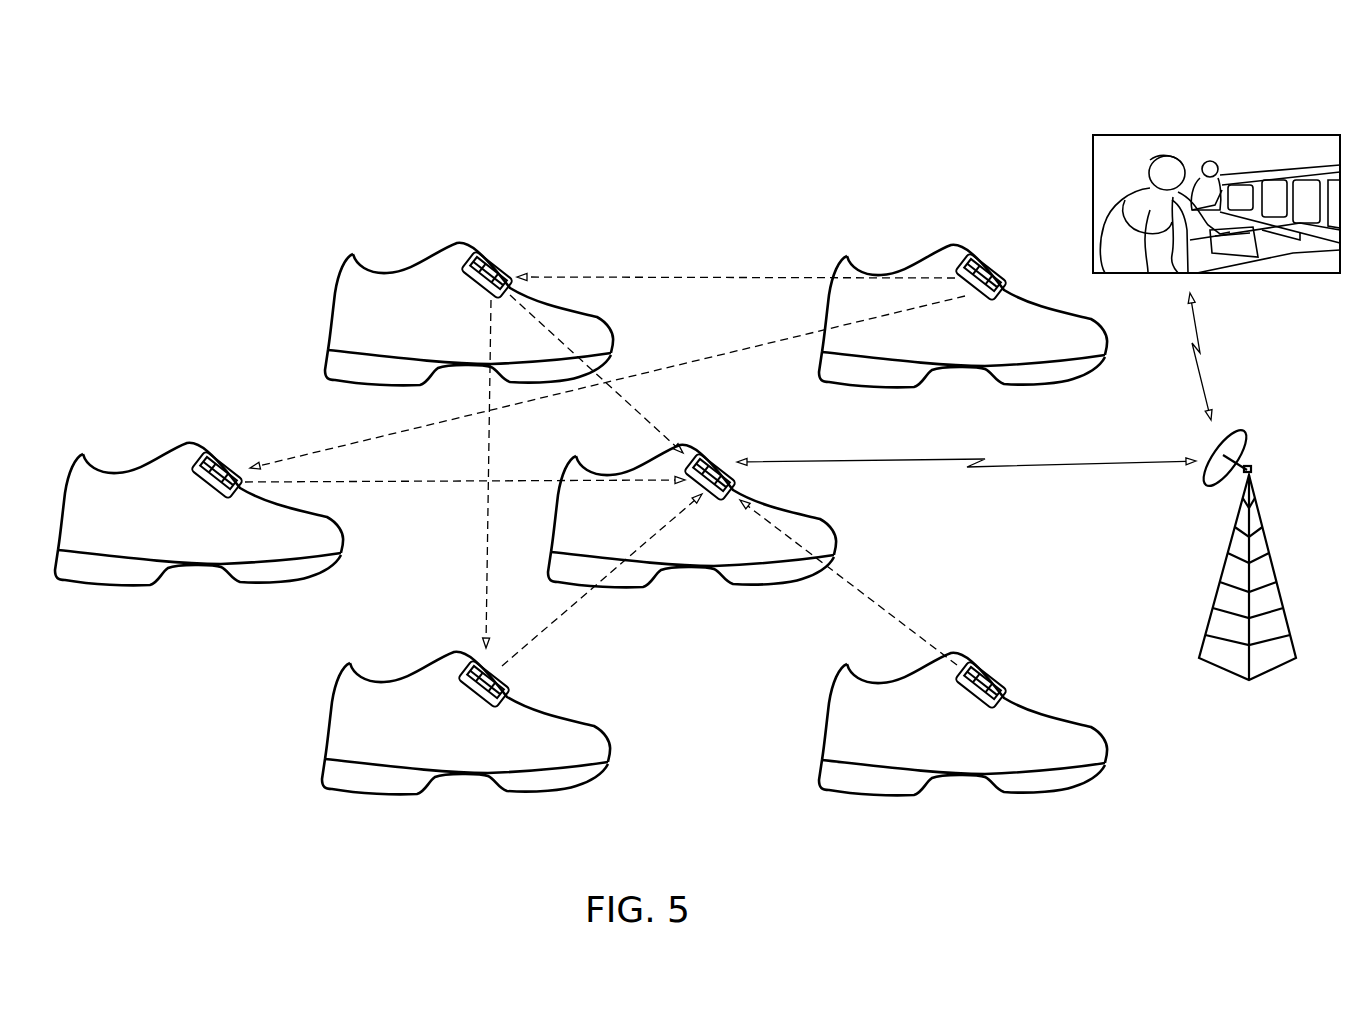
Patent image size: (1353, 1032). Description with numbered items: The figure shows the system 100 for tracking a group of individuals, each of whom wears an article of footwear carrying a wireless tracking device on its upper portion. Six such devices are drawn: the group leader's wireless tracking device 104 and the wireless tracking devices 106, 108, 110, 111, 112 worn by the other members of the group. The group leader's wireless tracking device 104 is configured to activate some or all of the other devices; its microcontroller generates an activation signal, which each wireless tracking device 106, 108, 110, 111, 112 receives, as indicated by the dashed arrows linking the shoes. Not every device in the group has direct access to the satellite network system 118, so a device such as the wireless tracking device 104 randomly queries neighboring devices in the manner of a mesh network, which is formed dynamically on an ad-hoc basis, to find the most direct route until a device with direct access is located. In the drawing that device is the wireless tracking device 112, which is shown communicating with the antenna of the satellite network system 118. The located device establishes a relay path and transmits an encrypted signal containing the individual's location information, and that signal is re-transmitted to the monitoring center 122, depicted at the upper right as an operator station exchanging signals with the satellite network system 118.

The system 100 is at (320, 133).
The wireless tracking device 104 is at (928, 260).
The wireless tracking device 106 is at (452, 253).
The wireless tracking device 108 is at (173, 445).
The wireless tracking device 110 is at (347, 695).
The wireless tracking device 111 is at (1068, 727).
The wireless tracking device 112 is at (813, 513).
The satellite network system 118 is at (1267, 537).
The monitoring center 122 is at (1093, 140).